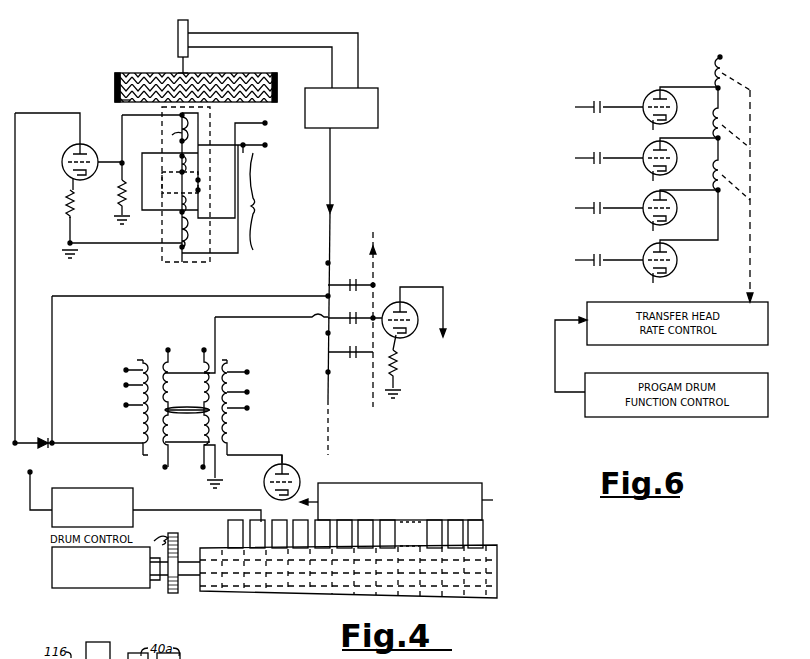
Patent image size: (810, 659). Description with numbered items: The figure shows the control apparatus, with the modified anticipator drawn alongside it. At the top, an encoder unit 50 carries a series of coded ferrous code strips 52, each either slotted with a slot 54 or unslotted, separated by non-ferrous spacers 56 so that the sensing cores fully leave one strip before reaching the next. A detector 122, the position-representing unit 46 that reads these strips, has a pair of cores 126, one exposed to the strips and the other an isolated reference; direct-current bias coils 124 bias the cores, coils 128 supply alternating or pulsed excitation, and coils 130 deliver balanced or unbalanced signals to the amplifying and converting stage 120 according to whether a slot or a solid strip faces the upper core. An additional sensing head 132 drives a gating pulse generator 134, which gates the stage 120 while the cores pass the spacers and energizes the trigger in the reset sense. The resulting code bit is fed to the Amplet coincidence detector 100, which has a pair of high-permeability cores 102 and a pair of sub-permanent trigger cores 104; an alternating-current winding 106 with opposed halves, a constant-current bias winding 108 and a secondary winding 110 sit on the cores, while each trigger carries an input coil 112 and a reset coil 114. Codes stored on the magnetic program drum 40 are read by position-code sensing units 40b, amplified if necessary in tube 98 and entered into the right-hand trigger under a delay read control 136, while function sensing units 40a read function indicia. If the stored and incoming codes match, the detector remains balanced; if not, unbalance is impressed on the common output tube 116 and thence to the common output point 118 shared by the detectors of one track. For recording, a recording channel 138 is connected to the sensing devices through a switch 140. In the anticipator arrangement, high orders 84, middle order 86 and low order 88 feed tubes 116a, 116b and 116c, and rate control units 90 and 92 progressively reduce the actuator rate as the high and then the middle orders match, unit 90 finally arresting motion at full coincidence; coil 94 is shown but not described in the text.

In FIG. 4, the drum 40 is at (497, 562).
In FIG. 4, the function sensing units 40a is at (478, 536).
In FIG. 4, the position-code sensing units 40b is at (300, 520).
In FIG. 4, the position-representing unit 46 is at (262, 170).
In FIG. 4, the position-representing unit 50 is at (274, 75).
In FIG. 4, the code strips 52 is at (181, 72).
In FIG. 4, the slot 54 is at (130, 102).
In FIG. 4, the non-ferrous spacers 56 is at (141, 72).
In FIG. 6, the high input orders 84 is at (594, 207).
In FIG. 6, the middle order 86 is at (594, 156).
In FIG. 6, the low order 88 is at (593, 104).
In FIG. 6, the rate control unit 90 is at (717, 176).
In FIG. 6, the rate control unit 92 is at (715, 126).
In FIG. 6, the coil 94 is at (708, 70).
In FIG. 4, the tube 98 is at (286, 464).
In FIG. 4, the Amplet coincidence detector 100 is at (158, 338).
In FIG. 4, the high-permeability cores 102 is at (198, 462).
In FIG. 4, the sub-permanent trigger cores 104 is at (136, 456).
In FIG. 4, the alternating-current winding 106 is at (168, 350).
In FIG. 4, the bias winding 108 is at (161, 470).
In FIG. 4, the secondary winding 110 is at (140, 419).
In FIG. 4, the input coil 112 is at (324, 267).
In FIG. 4, the reset coil 114 is at (138, 363).
In FIG. 4, the common output tube 116 is at (407, 305).
In FIG. 6, the high order tube 116a is at (647, 226).
In FIG. 6, the middle order tube 116b is at (647, 176).
In FIG. 6, the low order tube 116c is at (646, 123).
In FIG. 4, the common output point 118 is at (364, 362).
In FIG. 4, the amplifying and converting stage 120 is at (63, 152).
In FIG. 4, the detector 122 is at (197, 184).
In FIG. 4, the direct-current bias coils 124 is at (173, 176).
In FIG. 4, the cores 126 is at (180, 115).
In FIG. 4, the excitation coils 128 is at (179, 133).
In FIG. 4, the output coils 130 is at (190, 128).
In FIG. 4, the sensing head 132 is at (178, 29).
In FIG. 4, the gating pulse generator 134 is at (352, 88).
In FIG. 4, the delay read control 136 is at (463, 484).
In FIG. 4, the recording channel 138 is at (133, 498).
In FIG. 4, the switch 140 is at (36, 450).